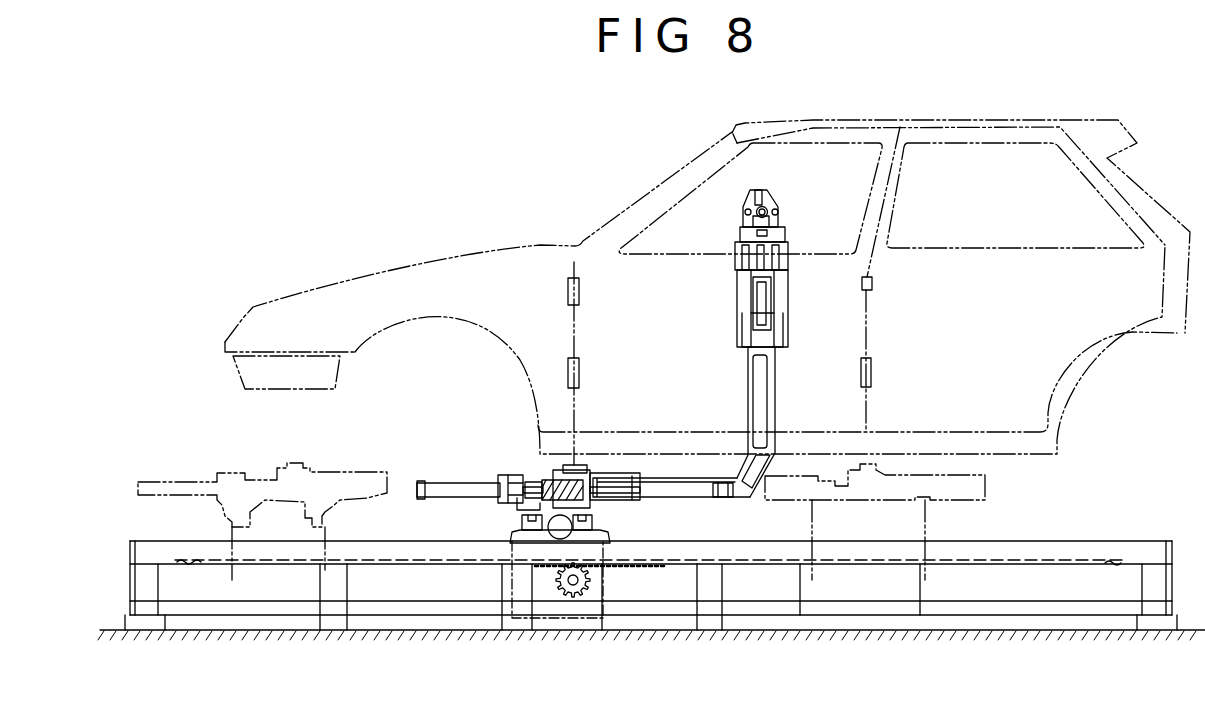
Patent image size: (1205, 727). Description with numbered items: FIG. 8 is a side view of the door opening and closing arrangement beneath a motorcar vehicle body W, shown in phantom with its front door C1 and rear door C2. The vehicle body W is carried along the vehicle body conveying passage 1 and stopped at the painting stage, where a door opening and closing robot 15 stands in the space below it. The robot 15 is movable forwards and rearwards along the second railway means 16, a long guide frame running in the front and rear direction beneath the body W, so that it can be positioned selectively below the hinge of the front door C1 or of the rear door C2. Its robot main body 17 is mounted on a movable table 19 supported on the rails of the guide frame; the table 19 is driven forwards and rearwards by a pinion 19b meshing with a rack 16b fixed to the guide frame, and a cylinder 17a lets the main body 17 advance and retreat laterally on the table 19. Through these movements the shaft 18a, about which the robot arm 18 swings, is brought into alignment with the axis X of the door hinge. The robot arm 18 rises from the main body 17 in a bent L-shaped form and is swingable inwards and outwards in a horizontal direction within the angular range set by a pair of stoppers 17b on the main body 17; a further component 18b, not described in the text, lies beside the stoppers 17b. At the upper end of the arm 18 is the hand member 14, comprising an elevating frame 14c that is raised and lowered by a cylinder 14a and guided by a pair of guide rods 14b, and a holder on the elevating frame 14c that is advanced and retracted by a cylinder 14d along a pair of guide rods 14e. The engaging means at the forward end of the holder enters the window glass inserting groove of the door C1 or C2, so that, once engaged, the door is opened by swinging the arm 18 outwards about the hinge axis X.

The vehicle body conveying passage 1 is at (410, 445).
The hand member 14 is at (755, 252).
The cylinder 14a is at (762, 318).
The guide rods 14b is at (742, 260).
The elevating frame 14c is at (787, 238).
The cylinder 14d is at (770, 180).
The guide rods 14e is at (745, 213).
The door opening and closing robot 15 is at (737, 374).
The second railway means 16 is at (402, 550).
The rack 16b is at (623, 568).
The robot main body 17 is at (612, 500).
The cylinder 17a is at (552, 542).
The stoppers 17b is at (545, 472).
The robot arm 18 is at (668, 483).
The shaft 18a is at (575, 465).
The drive cylinder 18b is at (465, 488).
The movable table 19 is at (605, 533).
The pinion 19b is at (576, 598).
The axis of the door hinge X is at (578, 337).
The motorcar vehicle body W is at (926, 109).
The front door C1 is at (833, 133).
The rear door C2 is at (977, 133).